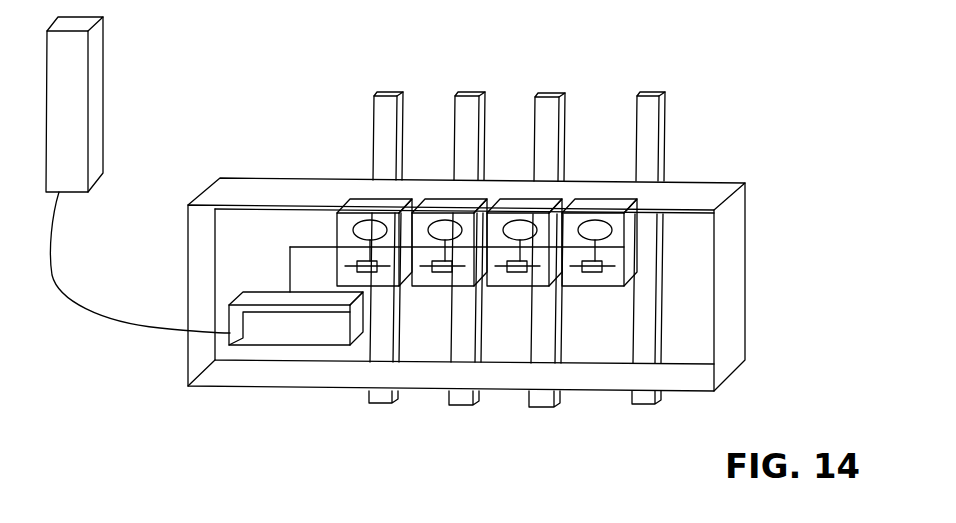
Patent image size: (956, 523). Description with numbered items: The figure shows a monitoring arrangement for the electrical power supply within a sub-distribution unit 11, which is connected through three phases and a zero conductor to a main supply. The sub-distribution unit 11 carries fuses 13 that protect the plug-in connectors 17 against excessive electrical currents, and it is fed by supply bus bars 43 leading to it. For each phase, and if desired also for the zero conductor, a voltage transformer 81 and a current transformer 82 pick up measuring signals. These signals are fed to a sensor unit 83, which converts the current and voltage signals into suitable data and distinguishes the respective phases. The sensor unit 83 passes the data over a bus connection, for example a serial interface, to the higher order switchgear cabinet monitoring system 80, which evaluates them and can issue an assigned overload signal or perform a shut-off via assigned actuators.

The switchgear cabinet monitoring system 80 is at (105, 52).
The sub-distribution unit 11 is at (232, 178).
The supply bus bars 43 is at (542, 88).
The fuses 13 is at (463, 230).
The plug-in connectors 17 is at (602, 200).
The current transformers 82 is at (352, 224).
The voltage transformers 81 is at (437, 274).
The sensor unit 83 is at (277, 327).